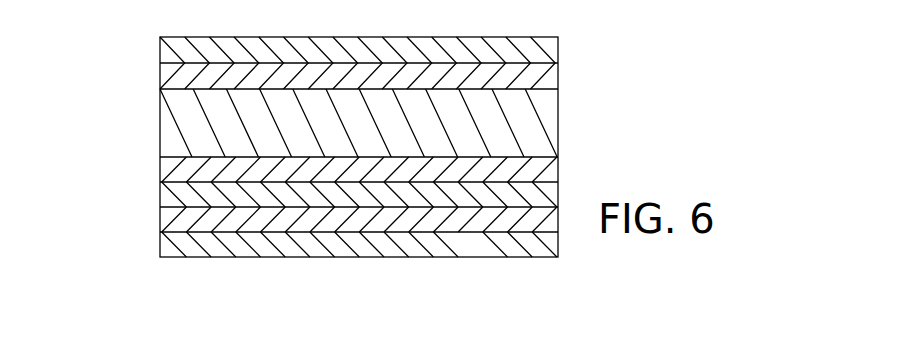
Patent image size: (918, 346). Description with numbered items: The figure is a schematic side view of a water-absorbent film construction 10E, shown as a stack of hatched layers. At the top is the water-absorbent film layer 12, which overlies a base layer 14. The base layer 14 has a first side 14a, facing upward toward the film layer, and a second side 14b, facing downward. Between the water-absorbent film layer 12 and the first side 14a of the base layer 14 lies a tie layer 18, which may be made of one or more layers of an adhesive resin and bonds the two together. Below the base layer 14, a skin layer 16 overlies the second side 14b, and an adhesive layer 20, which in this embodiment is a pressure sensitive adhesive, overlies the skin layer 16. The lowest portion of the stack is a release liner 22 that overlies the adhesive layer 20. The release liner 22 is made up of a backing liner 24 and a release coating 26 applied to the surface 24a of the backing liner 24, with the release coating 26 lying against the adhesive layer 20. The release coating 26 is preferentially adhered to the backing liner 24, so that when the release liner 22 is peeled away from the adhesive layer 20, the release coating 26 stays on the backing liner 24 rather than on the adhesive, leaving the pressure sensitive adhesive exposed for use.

The water-absorbent film construction 10E is at (92, 115).
The water-absorbent film layer 12 is at (160, 53).
The tie layer 18 is at (160, 77).
The base layer 14 is at (160, 122).
The first side of base layer 14a is at (353, 88).
The second side of base layer 14b is at (360, 157).
The skin layer 16 is at (160, 170).
The adhesive layer 20 is at (160, 192).
The release liner 22 is at (372, 218).
The release coating 26 is at (560, 213).
The backing liner 24 is at (560, 240).
The surface of backing liner 24a is at (476, 236).